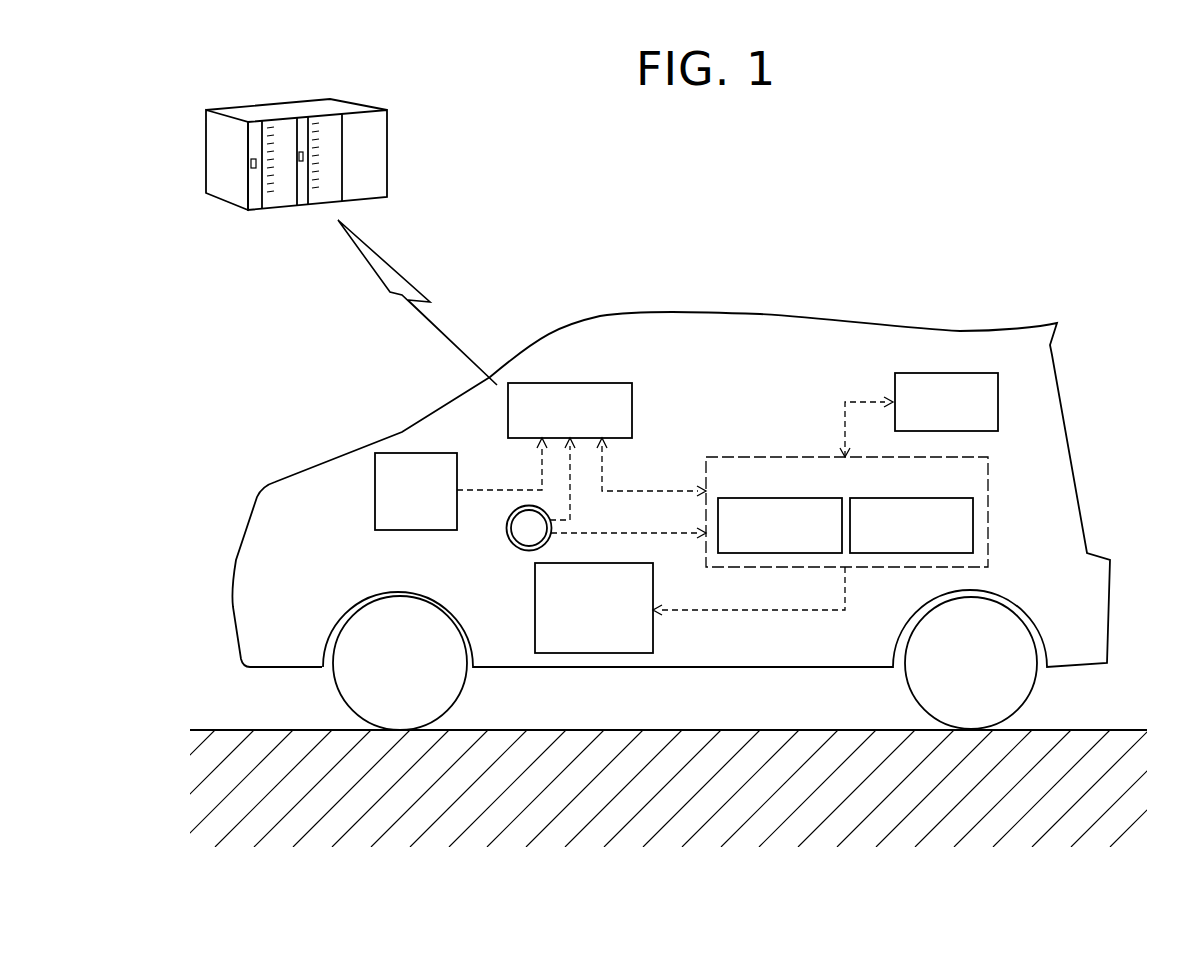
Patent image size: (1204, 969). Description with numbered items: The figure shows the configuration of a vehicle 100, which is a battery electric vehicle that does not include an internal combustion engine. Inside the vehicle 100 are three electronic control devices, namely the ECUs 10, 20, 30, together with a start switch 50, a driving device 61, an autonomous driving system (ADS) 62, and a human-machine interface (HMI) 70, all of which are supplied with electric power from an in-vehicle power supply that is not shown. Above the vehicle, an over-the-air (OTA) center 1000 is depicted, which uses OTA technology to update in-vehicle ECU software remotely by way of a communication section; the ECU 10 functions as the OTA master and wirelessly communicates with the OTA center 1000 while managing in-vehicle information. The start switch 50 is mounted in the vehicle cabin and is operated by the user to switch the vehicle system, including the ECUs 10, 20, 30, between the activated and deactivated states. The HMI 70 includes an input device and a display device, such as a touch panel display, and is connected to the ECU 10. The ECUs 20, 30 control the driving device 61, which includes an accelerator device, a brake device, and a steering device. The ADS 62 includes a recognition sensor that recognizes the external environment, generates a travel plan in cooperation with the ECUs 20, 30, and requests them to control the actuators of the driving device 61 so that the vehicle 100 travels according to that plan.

The OTA center 1000 is at (347, 97).
The vehicle 100 is at (918, 330).
The electronic control device (ECU) 10 is at (585, 383).
The electronic control device (ECU) 20 is at (795, 498).
The electronic control device (ECU) 30 is at (927, 498).
The start switch 50 is at (513, 544).
The driving device 61 is at (535, 620).
The autonomous driving system (ADS) 62 is at (957, 373).
The human-machine interface (HMI) 70 is at (402, 453).